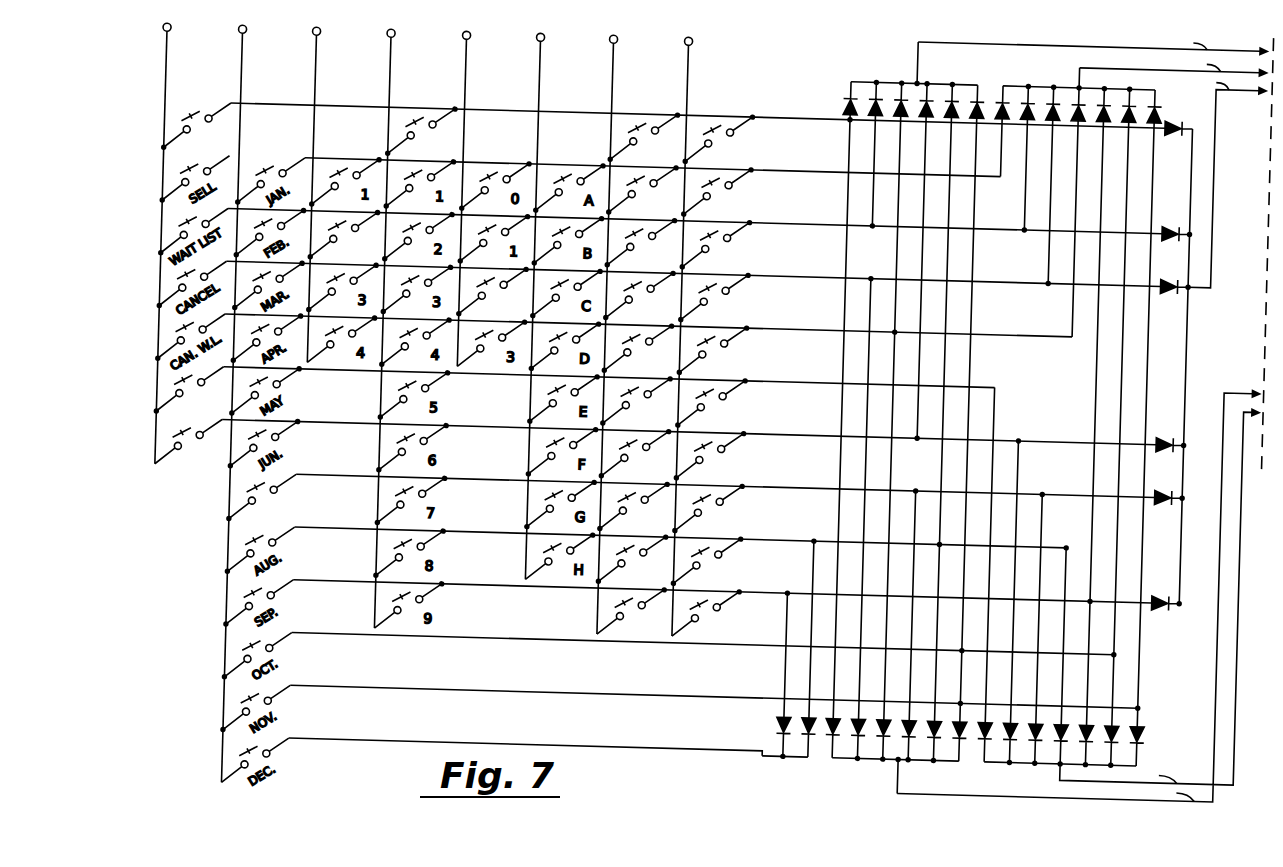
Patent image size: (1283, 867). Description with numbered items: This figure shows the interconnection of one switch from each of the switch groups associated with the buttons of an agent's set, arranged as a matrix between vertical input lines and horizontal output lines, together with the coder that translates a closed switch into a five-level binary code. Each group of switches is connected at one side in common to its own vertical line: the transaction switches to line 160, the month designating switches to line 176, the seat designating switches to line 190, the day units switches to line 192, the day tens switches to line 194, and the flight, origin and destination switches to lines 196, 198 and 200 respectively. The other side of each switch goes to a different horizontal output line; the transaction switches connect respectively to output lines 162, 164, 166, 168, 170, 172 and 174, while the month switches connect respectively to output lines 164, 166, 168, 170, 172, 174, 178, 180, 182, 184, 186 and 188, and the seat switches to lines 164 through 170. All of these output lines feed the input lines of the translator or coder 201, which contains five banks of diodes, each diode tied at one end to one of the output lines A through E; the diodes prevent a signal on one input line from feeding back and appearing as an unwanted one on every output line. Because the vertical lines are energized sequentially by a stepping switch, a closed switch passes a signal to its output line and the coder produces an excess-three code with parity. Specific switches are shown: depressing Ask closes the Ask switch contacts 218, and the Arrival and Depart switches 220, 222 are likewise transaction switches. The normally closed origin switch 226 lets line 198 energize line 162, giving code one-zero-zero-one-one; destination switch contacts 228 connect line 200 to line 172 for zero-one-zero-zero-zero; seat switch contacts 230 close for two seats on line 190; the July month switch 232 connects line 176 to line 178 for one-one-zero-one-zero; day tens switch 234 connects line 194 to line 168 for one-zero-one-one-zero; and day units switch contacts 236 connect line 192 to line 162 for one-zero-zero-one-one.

The transaction line 160 is at (165, 47).
The month line 176 is at (240, 47).
The seat line 190 is at (314, 47).
The day units line 192 is at (389, 47).
The day tens line 194 is at (464, 47).
The flight line 196 is at (538, 47).
The origin line 198 is at (612, 47).
The destination line 200 is at (686, 47).
The output line 162 is at (816, 103).
The output line 164 is at (817, 156).
The output line 166 is at (819, 208).
The output line 168 is at (821, 261).
The output line 170 is at (823, 314).
The output line 172 is at (825, 367).
The output line 174 is at (827, 420).
The output line 178 is at (814, 472).
The output line 180 is at (816, 525).
The output line 182 is at (818, 578).
The output line 184 is at (756, 630).
The output line 186 is at (782, 683).
The output line 188 is at (783, 736).
The coder 201 is at (878, 56).
The Ask switch contacts 218 is at (182, 124).
The Arrival switch 220 is at (181, 387).
The Depart switch 222 is at (181, 440).
The origin switch 226 is at (628, 125).
The destination switch contacts 228 is at (726, 406).
The seat switch contacts 230 is at (352, 251).
The July month switch 232 is at (257, 495).
The day tens switch 234 is at (491, 287).
The day units switch contacts 236 is at (405, 123).